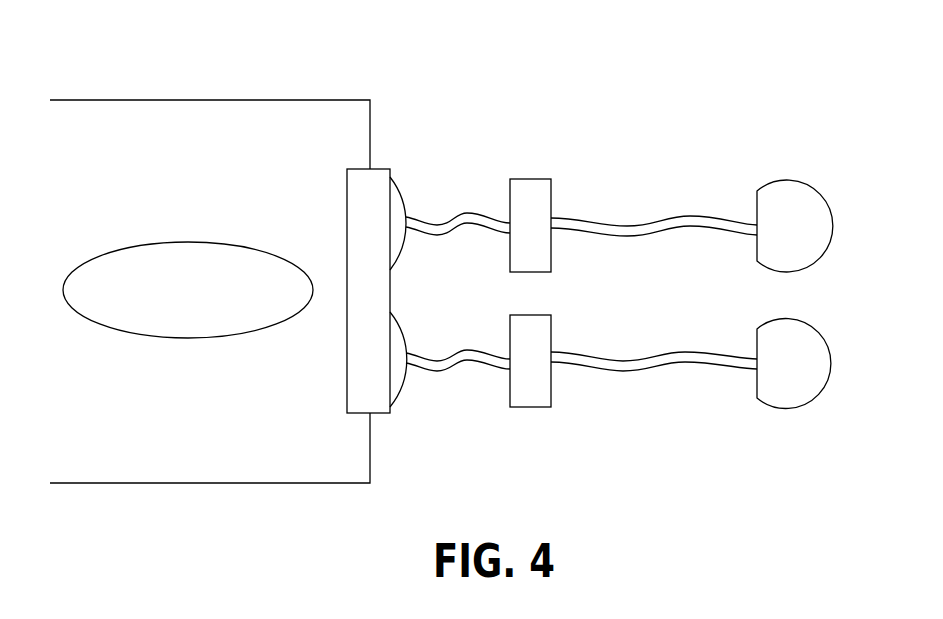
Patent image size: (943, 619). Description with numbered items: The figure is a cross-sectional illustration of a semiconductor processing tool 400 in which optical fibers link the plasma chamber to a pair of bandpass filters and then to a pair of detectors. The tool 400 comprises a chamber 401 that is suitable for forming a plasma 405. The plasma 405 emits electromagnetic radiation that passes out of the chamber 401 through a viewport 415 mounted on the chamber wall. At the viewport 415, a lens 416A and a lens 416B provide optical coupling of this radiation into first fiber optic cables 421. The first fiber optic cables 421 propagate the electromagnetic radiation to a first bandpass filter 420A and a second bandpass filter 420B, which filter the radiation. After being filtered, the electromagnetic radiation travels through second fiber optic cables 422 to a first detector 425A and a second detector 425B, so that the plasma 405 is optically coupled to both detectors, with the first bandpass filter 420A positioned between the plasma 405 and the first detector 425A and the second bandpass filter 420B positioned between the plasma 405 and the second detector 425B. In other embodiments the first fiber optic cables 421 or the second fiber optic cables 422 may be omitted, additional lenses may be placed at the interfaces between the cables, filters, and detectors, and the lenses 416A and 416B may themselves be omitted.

The semiconductor processing tool 400 is at (712, 44).
The chamber 401 is at (192, 103).
The plasma 405 is at (170, 257).
The viewport 415 is at (374, 178).
The lens 416A is at (393, 197).
The lens 416B is at (393, 385).
The first bandpass filter 420A is at (532, 190).
The second bandpass filter 420B is at (528, 328).
The first fiber optic cable 421 is at (436, 230).
The second fiber optic cable 422 is at (670, 230).
The first detector 425A is at (792, 192).
The second detector 425B is at (792, 328).